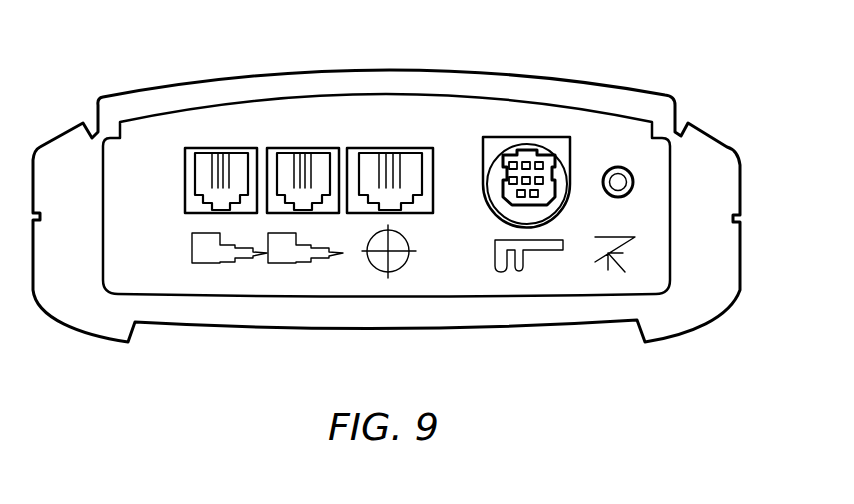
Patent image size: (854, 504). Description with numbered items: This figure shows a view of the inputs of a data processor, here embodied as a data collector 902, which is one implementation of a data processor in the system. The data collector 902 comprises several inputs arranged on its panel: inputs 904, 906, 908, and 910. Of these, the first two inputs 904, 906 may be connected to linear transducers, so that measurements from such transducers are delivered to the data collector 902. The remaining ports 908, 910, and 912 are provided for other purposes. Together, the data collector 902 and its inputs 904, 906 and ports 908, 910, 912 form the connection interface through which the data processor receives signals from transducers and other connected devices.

The data collector 902 is at (280, 68).
The input 904 is at (203, 178).
The input 906 is at (311, 197).
The port 908 is at (412, 178).
The port 910 is at (528, 210).
The port 912 is at (618, 180).